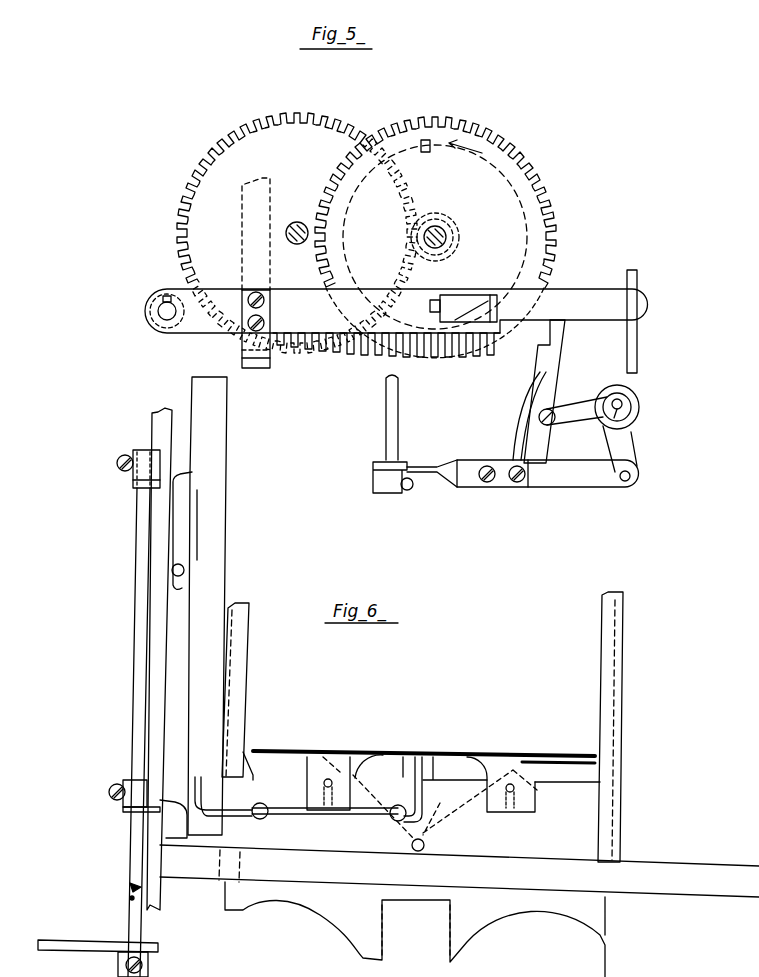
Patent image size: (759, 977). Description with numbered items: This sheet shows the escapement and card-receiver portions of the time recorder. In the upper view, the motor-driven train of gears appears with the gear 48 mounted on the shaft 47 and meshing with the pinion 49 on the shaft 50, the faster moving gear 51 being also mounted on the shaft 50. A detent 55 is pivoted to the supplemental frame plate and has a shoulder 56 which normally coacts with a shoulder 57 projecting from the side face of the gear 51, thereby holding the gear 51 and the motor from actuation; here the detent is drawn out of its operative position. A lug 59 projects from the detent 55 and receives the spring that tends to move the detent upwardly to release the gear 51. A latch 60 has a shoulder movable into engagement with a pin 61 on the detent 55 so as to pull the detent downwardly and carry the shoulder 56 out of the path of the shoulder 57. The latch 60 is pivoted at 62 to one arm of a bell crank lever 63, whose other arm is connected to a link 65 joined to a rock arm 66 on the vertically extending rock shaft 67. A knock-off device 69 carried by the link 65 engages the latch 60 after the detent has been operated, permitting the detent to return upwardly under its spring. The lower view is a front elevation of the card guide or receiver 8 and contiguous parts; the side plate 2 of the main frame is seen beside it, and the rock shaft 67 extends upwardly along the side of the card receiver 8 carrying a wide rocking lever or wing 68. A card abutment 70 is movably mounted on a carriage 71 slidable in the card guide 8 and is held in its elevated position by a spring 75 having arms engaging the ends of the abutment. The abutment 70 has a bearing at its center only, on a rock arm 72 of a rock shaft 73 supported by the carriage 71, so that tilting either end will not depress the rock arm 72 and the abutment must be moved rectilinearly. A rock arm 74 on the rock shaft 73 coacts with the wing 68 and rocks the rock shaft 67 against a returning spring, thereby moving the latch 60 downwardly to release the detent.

In FIG. 6, the side plate 2 is at (160, 424).
In FIG. 6, the card guide or receiver 8 is at (236, 676).
In FIG. 5, the shaft 47 is at (297, 224).
In FIG. 5, the gear 48 is at (181, 224).
In FIG. 5, the pinion 49 is at (458, 226).
In FIG. 5, the shaft 50 is at (446, 239).
In FIG. 5, the gear 51 is at (545, 199).
In FIG. 5, the detent 55 is at (311, 325).
In FIG. 5, the shoulder 56 is at (437, 300).
In FIG. 5, the shoulder 57 is at (430, 151).
In FIG. 5, the lug 59 is at (255, 368).
In FIG. 5, the latch 60 is at (556, 348).
In FIG. 5, the pin 61 is at (566, 292).
In FIG. 5, the pivot 62 is at (539, 417).
In FIG. 5, the bell crank lever 63 is at (616, 451).
In FIG. 5, the link 65 is at (573, 485).
In FIG. 5, the rock arm 66 is at (392, 464).
In FIG. 6, the rock arm 66 is at (96, 945).
In FIG. 5, the rock shaft 67 is at (386, 405).
In FIG. 6, the rock shaft 67 is at (130, 885).
In FIG. 6, the wing 68 is at (212, 528).
In FIG. 5, the knock-off device 69 is at (540, 386).
In FIG. 6, the card abutment 70 is at (479, 752).
In FIG. 6, the carriage 71 is at (275, 898).
In FIG. 6, the rock arm 72 is at (425, 815).
In FIG. 6, the rock shaft 73 is at (333, 815).
In FIG. 6, the rock arm 74 is at (238, 790).
In FIG. 6, the spring 75 is at (325, 760).